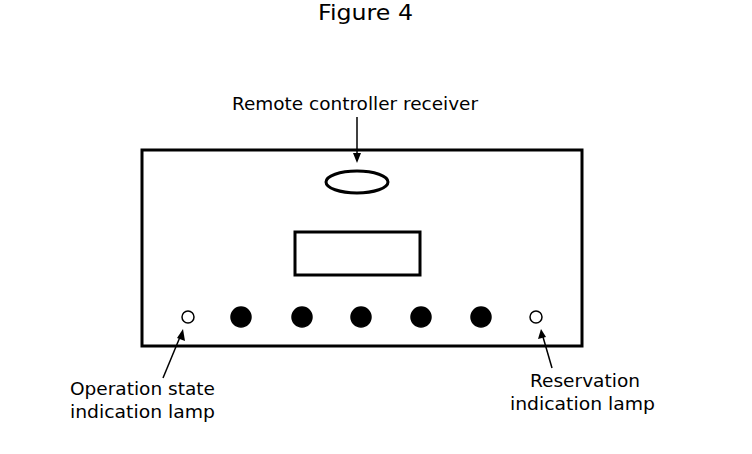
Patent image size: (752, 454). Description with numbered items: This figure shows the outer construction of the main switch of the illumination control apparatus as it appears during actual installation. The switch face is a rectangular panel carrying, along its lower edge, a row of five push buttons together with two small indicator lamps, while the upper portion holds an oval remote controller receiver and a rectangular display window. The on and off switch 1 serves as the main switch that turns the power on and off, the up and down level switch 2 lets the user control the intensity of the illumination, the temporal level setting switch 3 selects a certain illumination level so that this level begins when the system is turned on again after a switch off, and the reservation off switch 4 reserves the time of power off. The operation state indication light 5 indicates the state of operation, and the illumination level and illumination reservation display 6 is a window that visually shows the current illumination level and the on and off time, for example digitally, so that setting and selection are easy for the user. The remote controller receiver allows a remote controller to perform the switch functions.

The on and off switch 1 is at (241, 336).
The up and down level switch 2 is at (302, 336).
The temporal level setting switch 3 is at (362, 336).
The reservation off switch 4 is at (423, 336).
The operation state indication light 5 is at (483, 336).
The illumination level and illumination reservation display 6 is at (283, 230).